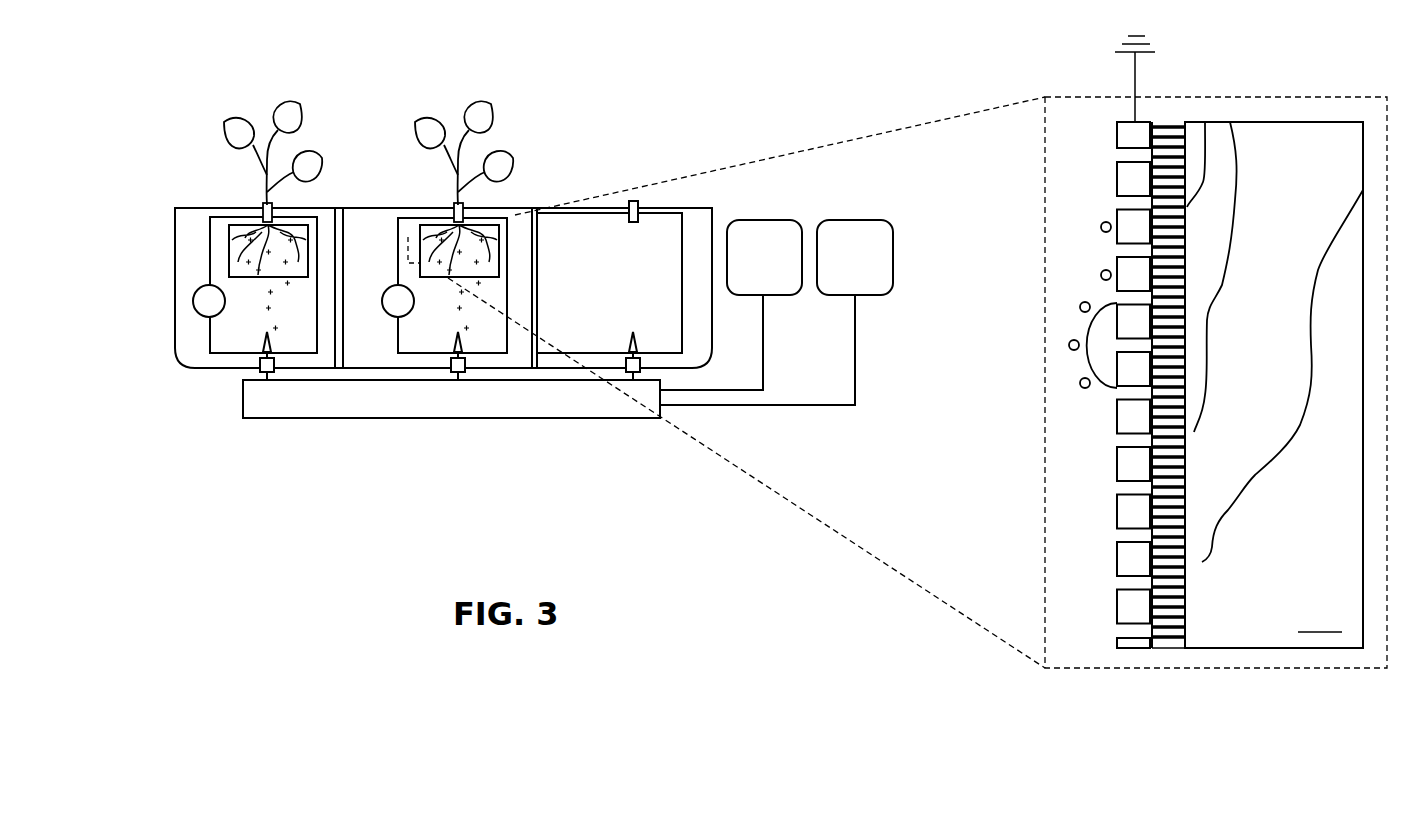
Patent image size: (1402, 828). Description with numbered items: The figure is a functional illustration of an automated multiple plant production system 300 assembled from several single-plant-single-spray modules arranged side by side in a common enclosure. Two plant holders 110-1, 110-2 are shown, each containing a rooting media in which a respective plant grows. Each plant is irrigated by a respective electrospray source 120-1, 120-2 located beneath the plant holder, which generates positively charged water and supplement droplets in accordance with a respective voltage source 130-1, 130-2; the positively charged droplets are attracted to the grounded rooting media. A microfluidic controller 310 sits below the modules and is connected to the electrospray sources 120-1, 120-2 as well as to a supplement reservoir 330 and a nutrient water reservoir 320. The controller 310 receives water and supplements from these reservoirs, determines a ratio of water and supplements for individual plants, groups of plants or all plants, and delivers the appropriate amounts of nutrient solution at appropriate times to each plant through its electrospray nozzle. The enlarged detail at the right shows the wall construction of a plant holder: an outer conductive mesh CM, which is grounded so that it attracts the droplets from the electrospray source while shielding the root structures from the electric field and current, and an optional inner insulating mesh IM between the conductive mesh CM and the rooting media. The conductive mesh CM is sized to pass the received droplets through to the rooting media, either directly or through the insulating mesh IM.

The system 300 is at (190, 82).
The plant holder 110-1 is at (245, 223).
The plant holder 110-2 is at (442, 223).
The voltage source 130-1 is at (200, 287).
The voltage source 130-2 is at (390, 287).
The electrospray source 120-1 is at (262, 340).
The electrospray source 120-2 is at (445, 342).
The microfluidic controller 310 is at (550, 418).
The supplement reservoir 330 is at (763, 220).
The nutrient water reservoir 320 is at (855, 220).
The outer conductive mesh CM is at (1135, 650).
The inner insulating mesh IM is at (1168, 650).